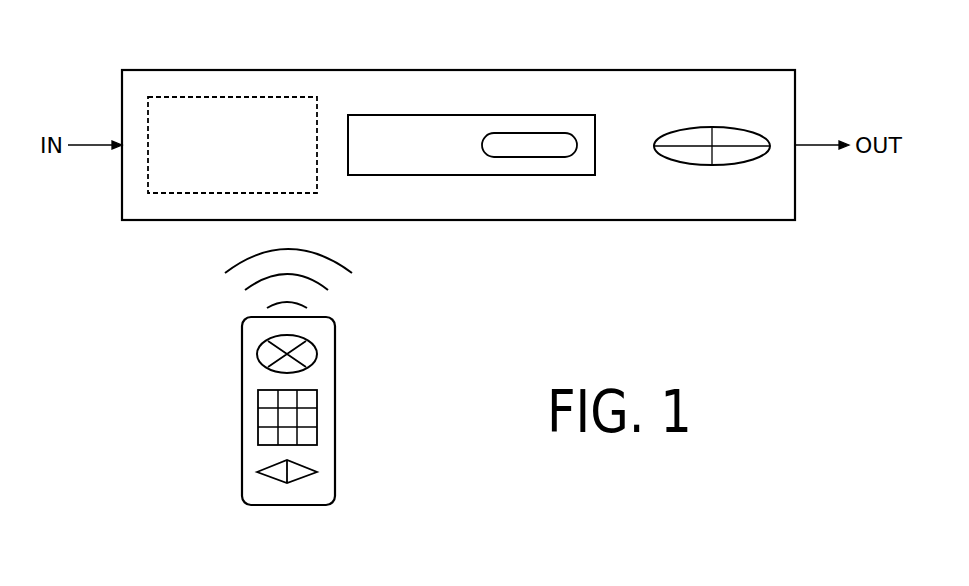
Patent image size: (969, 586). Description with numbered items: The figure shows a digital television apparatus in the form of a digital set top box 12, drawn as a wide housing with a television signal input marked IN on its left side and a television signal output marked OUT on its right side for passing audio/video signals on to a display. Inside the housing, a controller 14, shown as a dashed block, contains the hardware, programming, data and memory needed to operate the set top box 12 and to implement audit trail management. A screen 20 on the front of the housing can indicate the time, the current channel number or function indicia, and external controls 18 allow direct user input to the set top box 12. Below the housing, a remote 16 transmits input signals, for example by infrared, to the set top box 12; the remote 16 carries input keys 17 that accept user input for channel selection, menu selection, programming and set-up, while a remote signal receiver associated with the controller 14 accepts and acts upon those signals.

The digital set top box 12 is at (454, 70).
The controller 14 is at (287, 97).
The screen 20 is at (563, 115).
The external controls 18 is at (698, 133).
The remote 16 is at (335, 482).
The input keys 17 is at (317, 396).